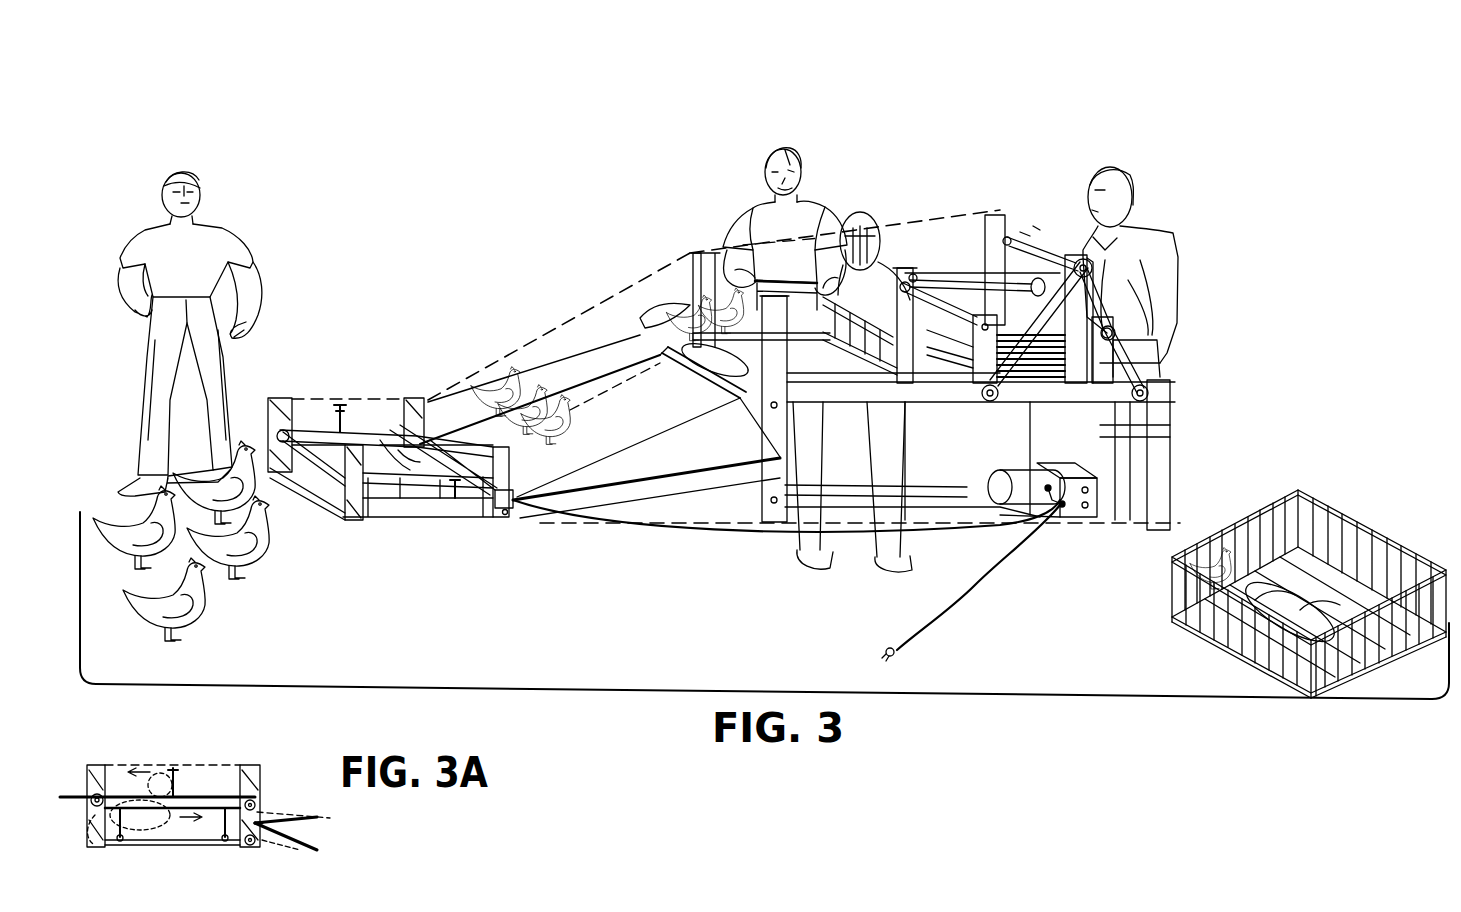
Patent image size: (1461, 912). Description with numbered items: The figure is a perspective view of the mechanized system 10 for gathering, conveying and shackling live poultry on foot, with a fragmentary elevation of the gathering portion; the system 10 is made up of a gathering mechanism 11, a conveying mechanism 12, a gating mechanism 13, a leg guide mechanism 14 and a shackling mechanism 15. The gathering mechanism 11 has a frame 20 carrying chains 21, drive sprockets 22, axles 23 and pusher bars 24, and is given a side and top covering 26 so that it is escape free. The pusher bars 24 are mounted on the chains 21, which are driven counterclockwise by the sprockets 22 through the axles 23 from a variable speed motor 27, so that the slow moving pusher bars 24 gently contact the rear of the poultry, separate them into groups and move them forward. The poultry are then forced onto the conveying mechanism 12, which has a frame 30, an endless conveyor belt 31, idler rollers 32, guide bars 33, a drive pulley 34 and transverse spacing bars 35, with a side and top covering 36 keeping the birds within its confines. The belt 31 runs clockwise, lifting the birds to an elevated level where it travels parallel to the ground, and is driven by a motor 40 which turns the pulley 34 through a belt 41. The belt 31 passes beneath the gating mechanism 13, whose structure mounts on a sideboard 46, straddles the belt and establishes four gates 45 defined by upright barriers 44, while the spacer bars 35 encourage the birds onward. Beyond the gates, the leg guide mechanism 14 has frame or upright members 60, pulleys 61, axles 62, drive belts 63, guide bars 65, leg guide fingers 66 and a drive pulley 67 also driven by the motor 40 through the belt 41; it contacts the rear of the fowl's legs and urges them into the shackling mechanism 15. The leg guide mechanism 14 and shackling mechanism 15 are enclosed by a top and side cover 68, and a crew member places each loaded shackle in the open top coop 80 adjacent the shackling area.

In FIG. 3, the mechanized system 10 is at (553, 215).
In FIG. 3, the gathering mechanism 11 is at (369, 439).
In FIG. 3, the conveying mechanism 12 is at (585, 380).
In FIG. 3, the gating mechanism 13 is at (825, 404).
In FIG. 3, the leg guide mechanism 14 is at (1028, 232).
In FIG. 3, the shackling mechanism 15 is at (1125, 350).
In FIG. 3, the frame 20 is at (355, 512).
In FIG. 3A, the frame 20 is at (96, 764).
In FIG. 3, the chains 21 is at (330, 442).
In FIG. 3A, the chains 21 is at (133, 795).
In FIG. 3, the drive sprockets 22 is at (290, 440).
In FIG. 3A, the drive sprockets 22 is at (255, 800).
In FIG. 3, the axles 23 is at (335, 472).
In FIG. 3A, the axles 23 is at (90, 801).
In FIG. 3, the pusher bars 24 is at (331, 374).
In FIG. 3A, the pusher bars 24 is at (180, 768).
In FIG. 3, the side and top covering 26 is at (300, 398).
In FIG. 3A, the side and top covering 26 is at (158, 765).
In FIG. 3, the motor 27 is at (560, 490).
In FIG. 3A, the motor 27 is at (262, 822).
In FIG. 3, the frame 30 is at (740, 477).
In FIG. 3A, the frame 30 is at (320, 850).
In FIG. 3, the endless conveyor belt 31 is at (645, 428).
In FIG. 3A, the endless conveyor belt 31 is at (300, 815).
In FIG. 3, the idler rollers 32 is at (515, 537).
In FIG. 3A, the idler rollers 32 is at (299, 821).
In FIG. 3, the guide bars 33 is at (872, 400).
In FIG. 3, the drive pulley 34 is at (1172, 392).
In FIG. 3, the transverse spacing bars 35 is at (695, 370).
In FIG. 3, the side and top covering 36 is at (478, 356).
In FIG. 3, the motor 40 is at (1000, 472).
In FIG. 3, the belt 41 is at (1172, 428).
In FIG. 3, the upright barriers 44 is at (910, 395).
In FIG. 3, the gates 45 is at (810, 400).
In FIG. 3, the sideboard 46 is at (905, 410).
In FIG. 3, the frame or upright members 60 is at (910, 275).
In FIG. 3, the pulleys 61 is at (915, 280).
In FIG. 3, the axles 62 is at (935, 290).
In FIG. 3, the drive belts 63 is at (960, 280).
In FIG. 3, the guide bars 65 is at (1008, 238).
In FIG. 3, the leg guide fingers 66 is at (1040, 240).
In FIG. 3, the drive pulley 67 is at (1133, 307).
In FIG. 3, the top and side cover 68 is at (955, 210).
In FIG. 3, the coop 80 is at (1300, 488).